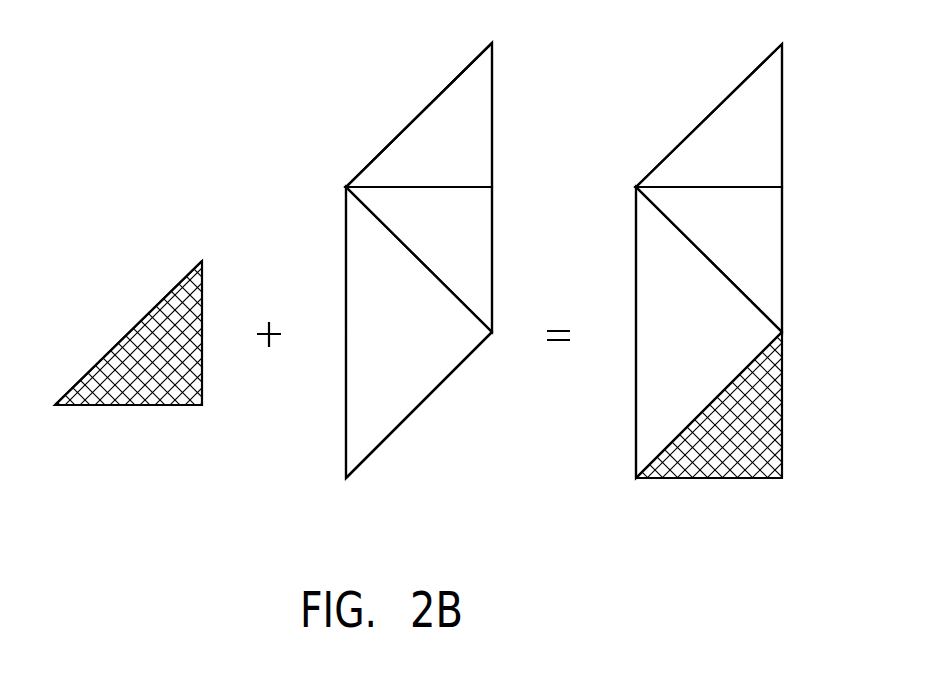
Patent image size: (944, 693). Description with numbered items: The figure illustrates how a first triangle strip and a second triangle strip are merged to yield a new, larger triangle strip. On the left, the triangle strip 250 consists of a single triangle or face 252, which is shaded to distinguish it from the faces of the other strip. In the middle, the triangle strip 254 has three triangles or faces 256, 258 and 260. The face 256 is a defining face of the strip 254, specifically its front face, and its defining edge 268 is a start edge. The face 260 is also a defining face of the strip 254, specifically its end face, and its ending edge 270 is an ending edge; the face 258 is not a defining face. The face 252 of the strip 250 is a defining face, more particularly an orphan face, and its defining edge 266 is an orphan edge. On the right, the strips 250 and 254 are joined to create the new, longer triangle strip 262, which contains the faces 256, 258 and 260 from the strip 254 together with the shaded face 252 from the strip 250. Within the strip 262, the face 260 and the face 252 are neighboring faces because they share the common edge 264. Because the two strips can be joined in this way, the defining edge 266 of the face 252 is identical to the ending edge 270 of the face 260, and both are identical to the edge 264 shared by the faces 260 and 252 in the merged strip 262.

The triangle strip 250 is at (128, 386).
The triangle (face) 252 is at (168, 310).
The triangle strip 254 is at (458, 471).
The triangle (face) 256 is at (465, 162).
The triangle (face) 258 is at (465, 243).
The triangle (face) 260 is at (422, 348).
The triangle strip 262 is at (708, 505).
The common edge 264 is at (677, 438).
The edge (orphan edge) 266 is at (128, 330).
The edge (start edge) 268 is at (418, 113).
The edge (ending edge) 270 is at (435, 393).